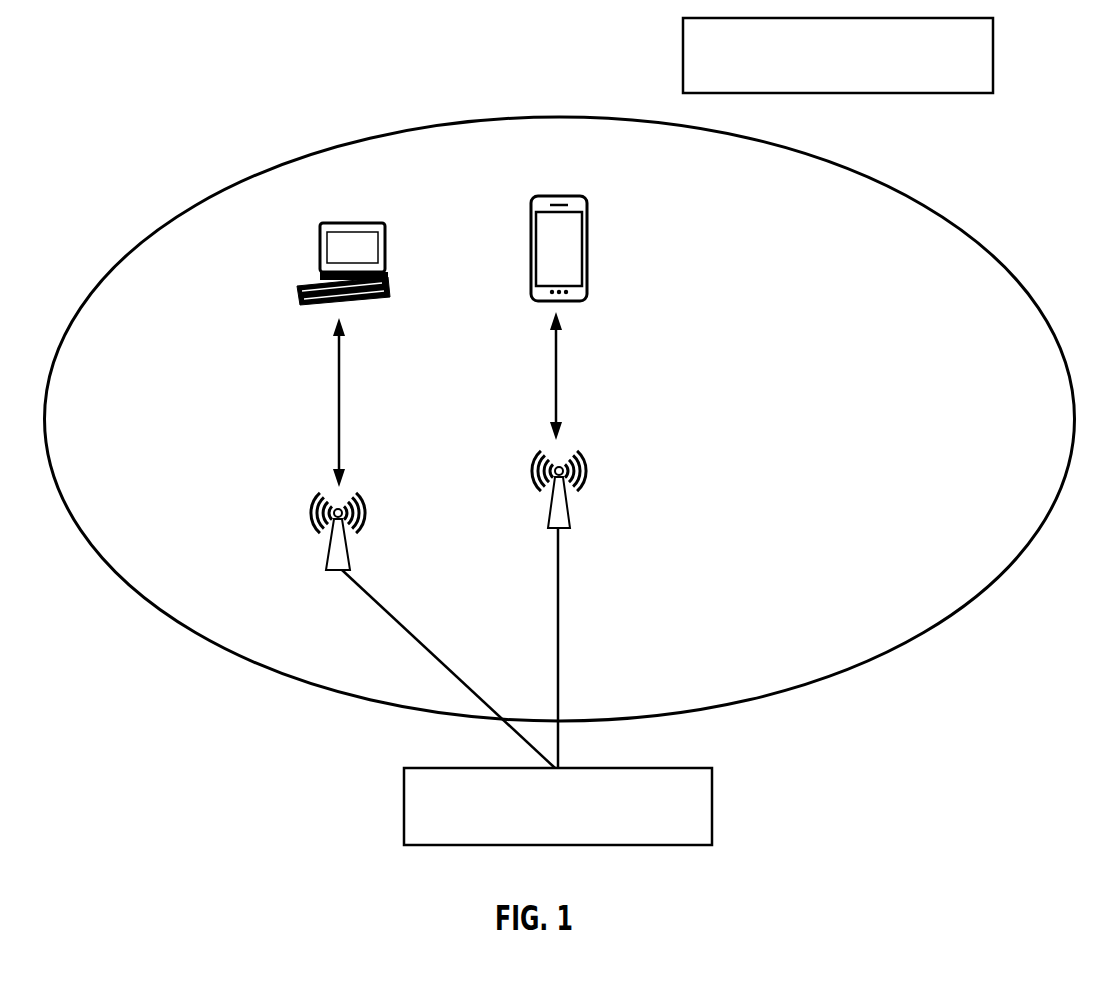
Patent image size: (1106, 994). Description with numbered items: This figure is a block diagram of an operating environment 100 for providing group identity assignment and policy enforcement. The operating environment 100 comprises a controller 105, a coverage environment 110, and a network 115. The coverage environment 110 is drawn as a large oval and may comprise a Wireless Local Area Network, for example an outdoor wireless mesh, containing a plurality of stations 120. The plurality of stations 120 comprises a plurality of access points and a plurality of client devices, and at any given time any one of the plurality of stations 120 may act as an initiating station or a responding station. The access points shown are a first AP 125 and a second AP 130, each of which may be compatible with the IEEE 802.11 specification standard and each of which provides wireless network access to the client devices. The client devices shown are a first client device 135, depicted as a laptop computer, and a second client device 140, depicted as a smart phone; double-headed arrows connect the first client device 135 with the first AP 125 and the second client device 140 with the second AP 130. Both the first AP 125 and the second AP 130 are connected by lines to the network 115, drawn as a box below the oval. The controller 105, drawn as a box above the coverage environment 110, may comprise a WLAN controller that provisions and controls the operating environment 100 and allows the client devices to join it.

The operating environment 100 is at (222, 70).
The controller 105 is at (993, 56).
The coverage environment 110 is at (962, 229).
The network 115 is at (712, 806).
The plurality of stations 120 is at (738, 258).
The first access point 125 is at (348, 548).
The second access point 130 is at (568, 505).
The first client device 135 is at (318, 240).
The second client device 140 is at (588, 222).